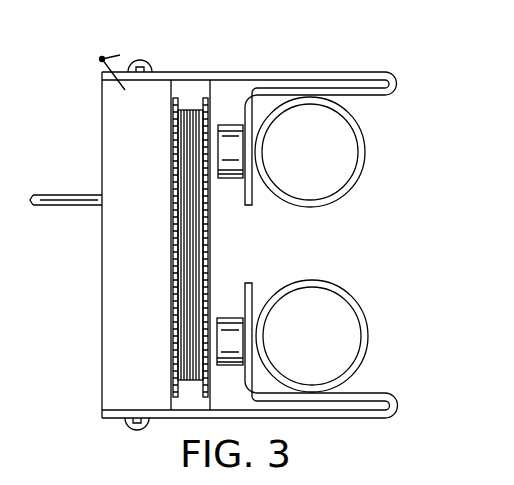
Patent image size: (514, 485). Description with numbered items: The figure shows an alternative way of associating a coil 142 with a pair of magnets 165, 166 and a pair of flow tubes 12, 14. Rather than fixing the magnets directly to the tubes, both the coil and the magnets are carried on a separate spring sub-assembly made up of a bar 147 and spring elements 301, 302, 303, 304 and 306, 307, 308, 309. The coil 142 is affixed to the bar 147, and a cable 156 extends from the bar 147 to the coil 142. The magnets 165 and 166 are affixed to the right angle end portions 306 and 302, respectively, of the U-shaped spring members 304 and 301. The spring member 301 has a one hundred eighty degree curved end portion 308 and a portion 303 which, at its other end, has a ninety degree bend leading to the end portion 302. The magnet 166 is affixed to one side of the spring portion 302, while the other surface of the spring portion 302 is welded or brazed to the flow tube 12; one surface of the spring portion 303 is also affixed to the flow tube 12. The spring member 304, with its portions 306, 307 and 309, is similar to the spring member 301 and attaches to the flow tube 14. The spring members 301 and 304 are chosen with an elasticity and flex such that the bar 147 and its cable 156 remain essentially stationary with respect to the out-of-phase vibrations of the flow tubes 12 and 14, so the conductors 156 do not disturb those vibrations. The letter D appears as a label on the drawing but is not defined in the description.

The flow tube 12 is at (366, 150).
The flow tube 14 is at (367, 325).
The diameter / dimension indicator D is at (112, 87).
The coil 142 is at (190, 110).
The bar 147 is at (100, 266).
The cable 156 is at (73, 192).
The magnet 165 is at (230, 318).
The magnet 166 is at (233, 122).
The U-shaped spring member 301 is at (338, 72).
The end portion 302 is at (249, 206).
The spring portion 303 is at (373, 96).
The U-shaped spring member 304 is at (372, 419).
The end portion 306 is at (258, 282).
The spring element 307 is at (362, 390).
The curved end portion 308 is at (398, 81).
The spring element 309 is at (398, 405).